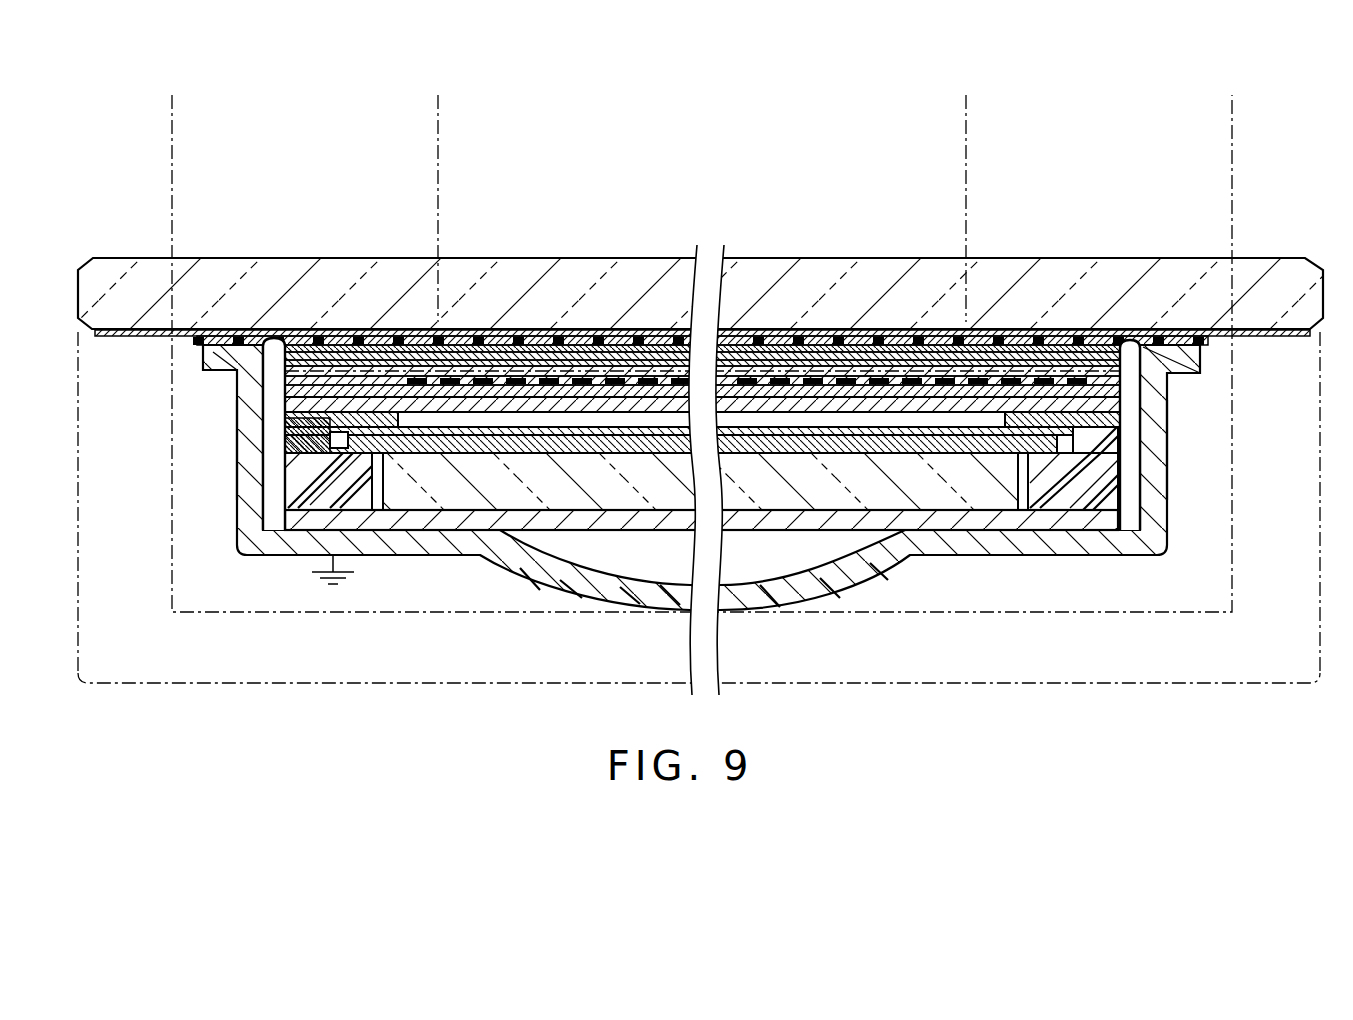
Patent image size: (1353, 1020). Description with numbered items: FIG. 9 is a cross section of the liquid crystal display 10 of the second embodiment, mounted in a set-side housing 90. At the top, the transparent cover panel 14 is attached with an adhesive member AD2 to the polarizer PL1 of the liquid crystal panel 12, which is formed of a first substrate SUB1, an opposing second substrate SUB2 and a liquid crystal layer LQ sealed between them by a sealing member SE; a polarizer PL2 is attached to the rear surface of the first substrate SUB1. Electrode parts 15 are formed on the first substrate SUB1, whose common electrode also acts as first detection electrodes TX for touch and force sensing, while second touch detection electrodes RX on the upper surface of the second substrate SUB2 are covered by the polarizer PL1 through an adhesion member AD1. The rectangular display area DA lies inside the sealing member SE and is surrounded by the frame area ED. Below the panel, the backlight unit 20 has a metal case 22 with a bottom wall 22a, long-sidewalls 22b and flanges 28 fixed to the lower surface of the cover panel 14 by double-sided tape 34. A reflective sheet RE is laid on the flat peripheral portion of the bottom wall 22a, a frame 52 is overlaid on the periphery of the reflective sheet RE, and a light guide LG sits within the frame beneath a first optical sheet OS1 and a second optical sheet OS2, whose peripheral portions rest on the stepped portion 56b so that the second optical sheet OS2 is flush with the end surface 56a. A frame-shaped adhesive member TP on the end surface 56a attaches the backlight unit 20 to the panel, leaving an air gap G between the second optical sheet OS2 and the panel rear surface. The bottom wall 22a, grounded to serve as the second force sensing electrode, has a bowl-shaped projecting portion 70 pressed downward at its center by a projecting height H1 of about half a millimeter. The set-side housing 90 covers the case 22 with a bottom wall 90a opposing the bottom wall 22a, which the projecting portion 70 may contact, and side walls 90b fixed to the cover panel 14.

The liquid crystal display 10 is at (1180, 248).
The liquid crystal panel 12 is at (702, 271).
The cover panel 14 is at (215, 270).
The electrode parts 15 is at (930, 340).
The backlight unit 20 is at (676, 535).
The case 22 is at (697, 506).
The bottom wall 22a is at (533, 560).
The long-sidewall 22b is at (1157, 470).
The flange 28 is at (1200, 357).
The double-sided tape 34 is at (1160, 347).
The frame 52 is at (1165, 550).
The end surface 56a is at (1120, 438).
The stepped portion 56b is at (1103, 502).
The projecting portion 70 is at (797, 590).
The set-side housing 90 is at (699, 476).
The bottom wall 90a is at (1172, 668).
The side wall 90b is at (1300, 417).
The frame area ED is at (1218, 115).
The display area DA is at (452, 115).
The sealing member SE is at (1085, 330).
The second touch detection electrode RX is at (760, 343).
The first detection electrode TX is at (800, 380).
The polarizer PL1 is at (508, 352).
The polarizer PL2 is at (475, 182).
The first substrate SUB1 is at (585, 392).
The second substrate SUB2 is at (533, 360).
The liquid crystal layer LQ is at (535, 371).
The adhesion member AD1 is at (1020, 345).
The adhesive member AD2 is at (788, 350).
The adhesive member TP is at (1120, 420).
The first optical sheet OS1 is at (332, 440).
The second optical sheet OS2 is at (285, 433).
The light guide LG is at (410, 493).
The reflective sheet RE is at (980, 522).
The gap G is at (933, 426).
The projecting height H1 is at (605, 597).